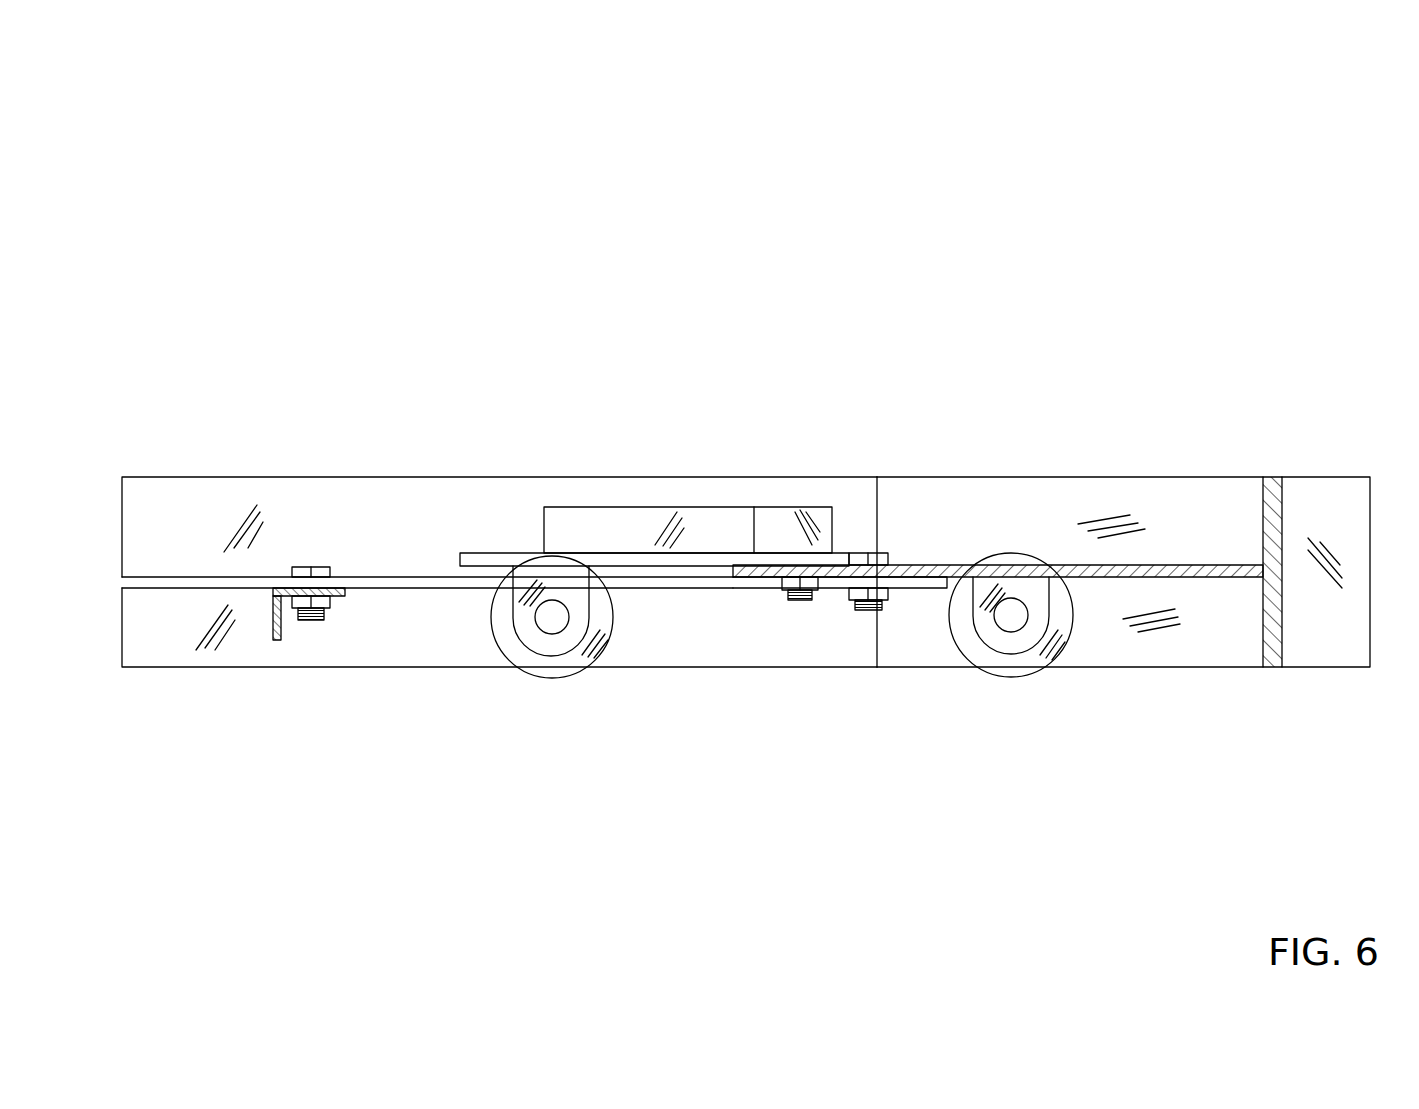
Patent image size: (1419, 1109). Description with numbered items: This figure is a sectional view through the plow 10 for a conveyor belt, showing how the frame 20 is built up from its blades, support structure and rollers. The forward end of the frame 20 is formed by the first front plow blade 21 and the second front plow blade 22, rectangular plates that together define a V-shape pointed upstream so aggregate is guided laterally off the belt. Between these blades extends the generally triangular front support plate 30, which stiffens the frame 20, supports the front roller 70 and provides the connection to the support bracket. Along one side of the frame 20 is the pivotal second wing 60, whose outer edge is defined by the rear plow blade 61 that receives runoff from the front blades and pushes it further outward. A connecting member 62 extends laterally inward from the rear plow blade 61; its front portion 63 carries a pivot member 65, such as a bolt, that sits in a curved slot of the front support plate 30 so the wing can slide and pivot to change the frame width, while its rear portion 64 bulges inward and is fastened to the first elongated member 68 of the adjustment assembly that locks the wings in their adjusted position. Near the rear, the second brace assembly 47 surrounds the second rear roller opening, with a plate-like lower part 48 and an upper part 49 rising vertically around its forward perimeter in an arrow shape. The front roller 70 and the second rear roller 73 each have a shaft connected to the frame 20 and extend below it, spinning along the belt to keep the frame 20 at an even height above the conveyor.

The plow 10 is at (216, 160).
The frame 20 is at (1326, 407).
The first front plow blade 21 is at (1312, 650).
The second front plow blade 22 is at (1213, 488).
The front support plate 30 is at (1097, 563).
The second brace assembly 47 is at (448, 556).
The lower part 48 is at (516, 553).
The upper part 49 is at (600, 515).
The second wing 60 is at (284, 472).
The rear plow blade 61 is at (210, 488).
The connecting member 62 is at (238, 583).
The front portion 63 is at (913, 580).
The rear portion 64 is at (163, 585).
The pivot member 65 is at (866, 553).
The first elongated member 68 is at (342, 595).
The front roller 70 is at (1013, 677).
The second rear roller 73 is at (552, 678).